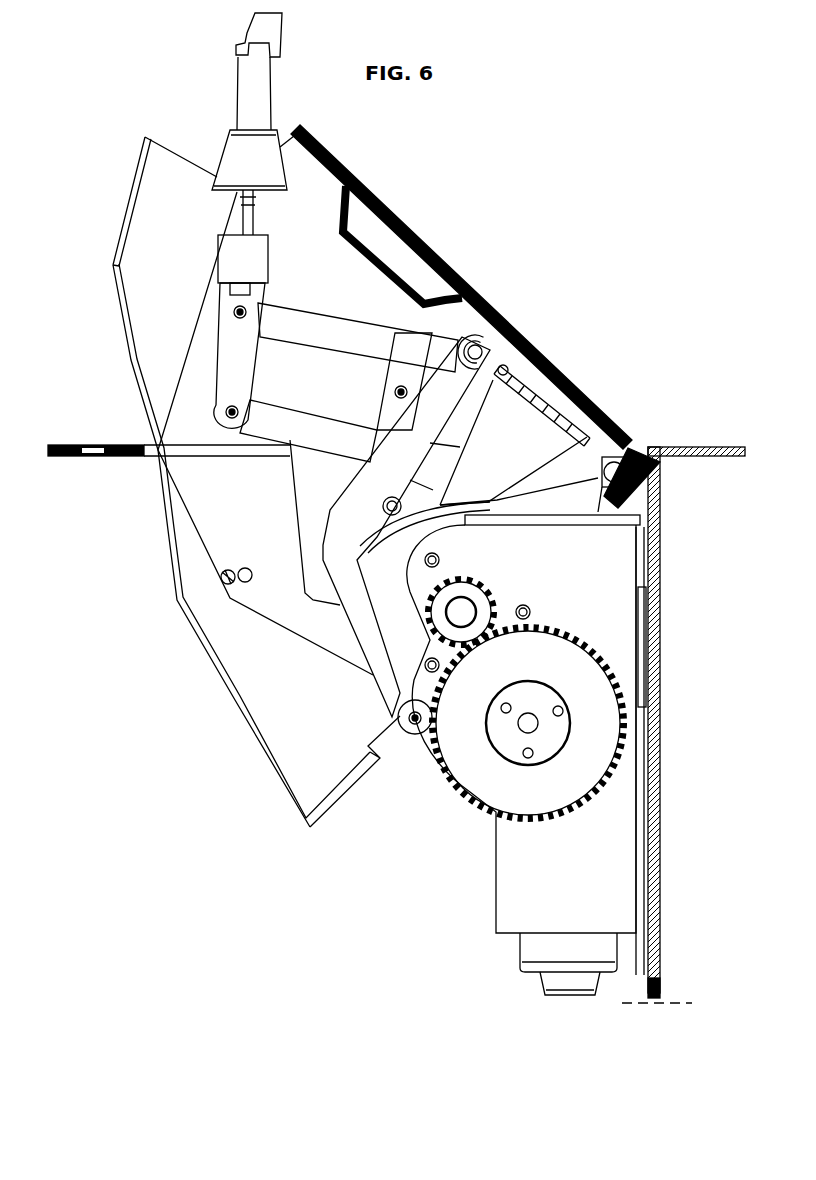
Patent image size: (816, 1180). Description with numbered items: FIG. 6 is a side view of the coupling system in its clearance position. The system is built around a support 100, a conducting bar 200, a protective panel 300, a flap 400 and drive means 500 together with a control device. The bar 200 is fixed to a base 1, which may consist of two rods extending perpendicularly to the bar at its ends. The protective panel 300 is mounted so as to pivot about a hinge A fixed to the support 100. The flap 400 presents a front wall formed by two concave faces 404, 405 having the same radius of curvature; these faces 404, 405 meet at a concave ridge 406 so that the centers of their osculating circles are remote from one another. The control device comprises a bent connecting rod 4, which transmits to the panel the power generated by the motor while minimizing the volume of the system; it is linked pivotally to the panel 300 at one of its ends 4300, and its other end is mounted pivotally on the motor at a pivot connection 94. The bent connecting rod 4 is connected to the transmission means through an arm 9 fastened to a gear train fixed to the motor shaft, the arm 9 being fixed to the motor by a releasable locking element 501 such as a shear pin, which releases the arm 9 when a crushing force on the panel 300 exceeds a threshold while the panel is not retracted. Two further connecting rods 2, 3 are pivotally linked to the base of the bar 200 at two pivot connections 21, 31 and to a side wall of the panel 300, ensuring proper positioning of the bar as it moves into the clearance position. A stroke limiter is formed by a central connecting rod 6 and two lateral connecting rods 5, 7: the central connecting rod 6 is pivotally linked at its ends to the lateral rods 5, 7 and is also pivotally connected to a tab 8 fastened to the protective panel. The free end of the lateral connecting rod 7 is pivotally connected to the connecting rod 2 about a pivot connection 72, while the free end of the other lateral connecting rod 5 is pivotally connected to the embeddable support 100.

The conducting bar 200 is at (262, 23).
The protective panel 300 is at (462, 250).
The flap 400 is at (215, 482).
The concave face 404 is at (120, 205).
The concave face 405 is at (123, 363).
The concave ridge 406 is at (113, 268).
The base 1 is at (233, 347).
The pivot connection 21 is at (236, 311).
The pivot connection 31 is at (236, 410).
The connecting rod 2 is at (318, 322).
The connecting rod 3 is at (297, 425).
The lateral connecting rod 7 is at (390, 418).
The pivot connection 72 is at (395, 392).
The central connecting rod 6 is at (410, 488).
The bent connecting rod 4 is at (355, 597).
The end of bent connecting rod 4300 is at (480, 350).
The tab 8 is at (513, 437).
The hinge A is at (617, 472).
The lateral connecting rod 5 is at (515, 507).
The support 100 is at (655, 685).
The drive means 500 is at (618, 858).
The releasable locking element 501 is at (596, 732).
The arm 9 is at (423, 735).
The pivot connection 94 is at (412, 733).